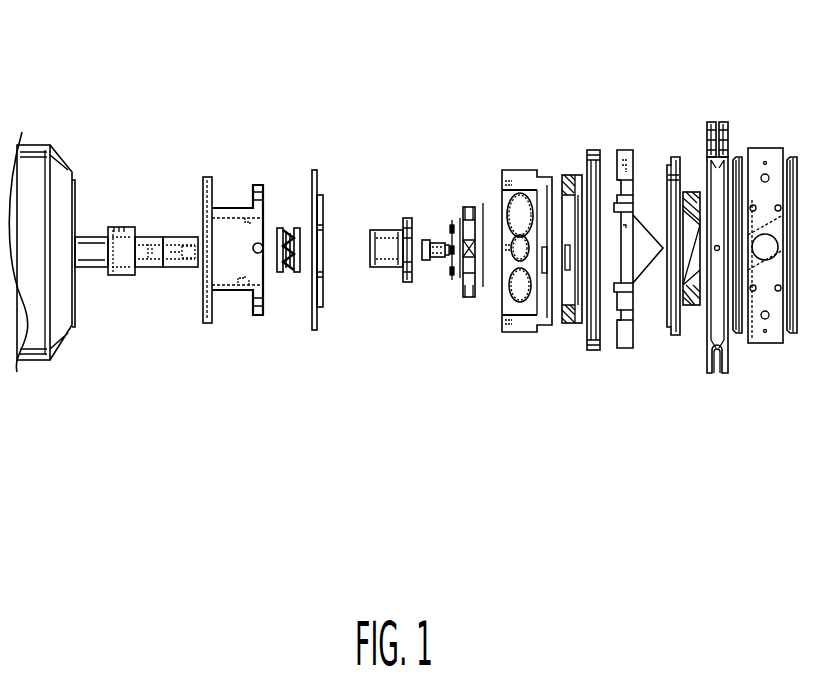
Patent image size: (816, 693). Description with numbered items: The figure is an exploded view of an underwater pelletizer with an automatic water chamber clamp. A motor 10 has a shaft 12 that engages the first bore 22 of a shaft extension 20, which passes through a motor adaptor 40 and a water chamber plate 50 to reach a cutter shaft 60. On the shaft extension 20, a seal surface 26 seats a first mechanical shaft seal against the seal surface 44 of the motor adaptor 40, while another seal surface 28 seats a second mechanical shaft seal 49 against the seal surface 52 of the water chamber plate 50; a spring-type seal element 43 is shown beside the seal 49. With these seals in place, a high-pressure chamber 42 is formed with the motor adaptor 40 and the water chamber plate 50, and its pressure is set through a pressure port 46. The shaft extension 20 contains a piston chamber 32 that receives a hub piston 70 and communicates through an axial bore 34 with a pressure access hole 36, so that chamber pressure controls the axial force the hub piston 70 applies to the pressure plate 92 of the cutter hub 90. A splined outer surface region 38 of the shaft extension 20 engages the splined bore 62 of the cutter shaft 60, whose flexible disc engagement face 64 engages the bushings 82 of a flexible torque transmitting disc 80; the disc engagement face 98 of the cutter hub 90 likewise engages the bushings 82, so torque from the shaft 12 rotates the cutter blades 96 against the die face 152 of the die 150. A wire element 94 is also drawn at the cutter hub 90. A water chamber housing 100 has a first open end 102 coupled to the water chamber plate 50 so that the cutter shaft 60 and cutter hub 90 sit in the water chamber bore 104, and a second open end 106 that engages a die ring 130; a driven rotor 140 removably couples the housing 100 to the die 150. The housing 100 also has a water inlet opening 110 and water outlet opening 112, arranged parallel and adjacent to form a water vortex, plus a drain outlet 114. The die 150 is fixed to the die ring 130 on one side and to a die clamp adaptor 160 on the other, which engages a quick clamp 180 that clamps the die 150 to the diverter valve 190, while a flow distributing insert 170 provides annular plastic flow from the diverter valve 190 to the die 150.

The motor 10 is at (60, 337).
The shaft 12 is at (93, 237).
The shaft extension 20 is at (125, 277).
The first bore 22 is at (116, 277).
The seal surface 26 is at (137, 277).
The seal surface 28 is at (160, 268).
The piston chamber 32 is at (192, 243).
The axial bore 34 is at (172, 243).
The pressure access hole 36 is at (150, 240).
The splined outer surface region 38 is at (183, 268).
The motor adaptor 40 is at (207, 325).
The high-pressure chamber 42 is at (251, 296).
The spring end plate 43 is at (279, 228).
The seal surface 44 is at (252, 207).
The pressure port 46 is at (263, 252).
The second mechanical shaft seal 49 is at (297, 228).
The water chamber plate 50 is at (316, 332).
The seal surface 52 is at (318, 283).
The cutter shaft 60 is at (371, 268).
The splined bore 62 is at (393, 272).
The flexible disc engagement face 64 is at (412, 270).
The hub piston 70 is at (425, 240).
The flexible torque transmitting disc 80 is at (452, 225).
The bushings 82 is at (453, 277).
The cutter hub 90 is at (468, 207).
The pressure plate 92 is at (460, 218).
The wire 94 is at (483, 203).
The cutter blades 96 is at (470, 298).
The disc engagement face 98 is at (465, 297).
The water chamber housing 100 is at (512, 333).
The first open end 102 is at (501, 334).
The water chamber bore 104 is at (508, 221).
The second open end 106 is at (553, 178).
The water inlet opening 110 is at (527, 333).
The water outlet opening 112 is at (522, 195).
The drain outlet 114 is at (512, 256).
The die ring 130 is at (570, 325).
The driven rotor 140 is at (594, 350).
The die 150 is at (629, 150).
The die face 152 is at (614, 160).
The die clamp adaptor 160 is at (668, 162).
The flow distributing insert 170 is at (688, 192).
The clamp 180 is at (717, 374).
The diverter valve 190 is at (760, 344).